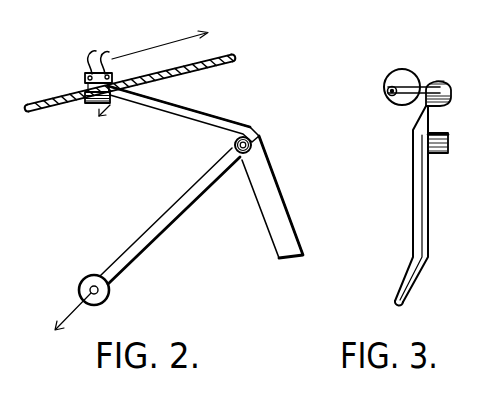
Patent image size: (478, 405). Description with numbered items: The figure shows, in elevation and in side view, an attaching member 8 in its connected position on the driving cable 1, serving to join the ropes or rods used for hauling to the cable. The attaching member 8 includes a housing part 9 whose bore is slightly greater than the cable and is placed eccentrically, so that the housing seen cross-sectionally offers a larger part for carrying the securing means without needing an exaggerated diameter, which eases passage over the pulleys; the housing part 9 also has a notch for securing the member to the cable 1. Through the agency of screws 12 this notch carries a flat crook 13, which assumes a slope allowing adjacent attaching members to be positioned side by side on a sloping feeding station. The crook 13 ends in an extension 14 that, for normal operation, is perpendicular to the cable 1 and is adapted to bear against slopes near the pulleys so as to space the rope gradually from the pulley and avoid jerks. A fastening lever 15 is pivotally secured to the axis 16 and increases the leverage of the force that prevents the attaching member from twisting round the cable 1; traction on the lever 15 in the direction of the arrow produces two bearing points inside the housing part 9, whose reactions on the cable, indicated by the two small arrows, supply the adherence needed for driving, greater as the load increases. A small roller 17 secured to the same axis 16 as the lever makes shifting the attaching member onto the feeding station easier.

In FIG. 2, the driving cable 1 is at (203, 70).
In FIG. 2, the attaching member 8 is at (85, 79).
In FIG. 3, the attaching member 8 is at (390, 77).
In FIG. 2, the housing part 9 is at (85, 101).
In FIG. 3, the housing part 9 is at (404, 78).
In FIG. 2, the screws 12 is at (91, 59).
In FIG. 2, the flat crook 13 is at (183, 108).
In FIG. 3, the flat crook 13 is at (445, 103).
In FIG. 2, the extension 14 is at (270, 215).
In FIG. 2, the fastening lever 15 is at (143, 250).
In FIG. 2, the axis 16 is at (252, 141).
In FIG. 2, the small roller 17 is at (237, 147).